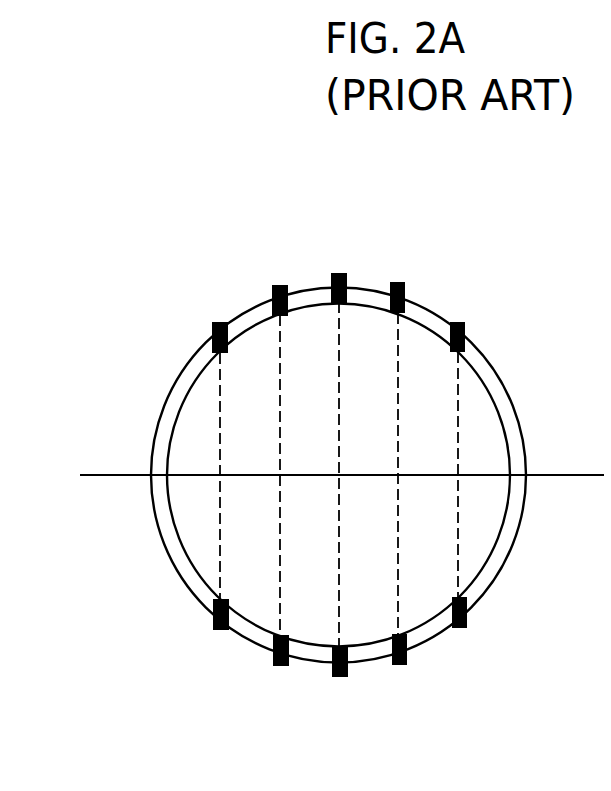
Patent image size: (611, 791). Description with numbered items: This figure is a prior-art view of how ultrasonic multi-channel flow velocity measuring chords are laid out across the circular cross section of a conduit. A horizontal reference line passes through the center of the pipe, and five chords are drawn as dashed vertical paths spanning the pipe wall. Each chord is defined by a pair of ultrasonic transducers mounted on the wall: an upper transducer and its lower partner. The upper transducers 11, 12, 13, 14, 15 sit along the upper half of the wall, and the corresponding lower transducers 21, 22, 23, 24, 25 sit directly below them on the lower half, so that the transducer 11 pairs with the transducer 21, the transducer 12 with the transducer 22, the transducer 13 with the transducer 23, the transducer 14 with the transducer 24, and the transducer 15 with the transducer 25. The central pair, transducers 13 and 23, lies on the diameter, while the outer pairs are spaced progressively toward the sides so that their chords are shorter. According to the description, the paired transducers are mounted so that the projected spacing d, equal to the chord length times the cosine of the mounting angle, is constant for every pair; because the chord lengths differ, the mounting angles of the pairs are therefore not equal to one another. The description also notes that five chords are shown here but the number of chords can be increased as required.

The transducer 11 is at (215, 324).
The transducer 12 is at (277, 287).
The transducer 13 is at (337, 274).
The transducer 14 is at (405, 283).
The transducer 15 is at (466, 327).
The transducer 21 is at (218, 631).
The transducer 22 is at (278, 667).
The transducer 23 is at (340, 678).
The transducer 24 is at (407, 664).
The transducer 25 is at (466, 623).